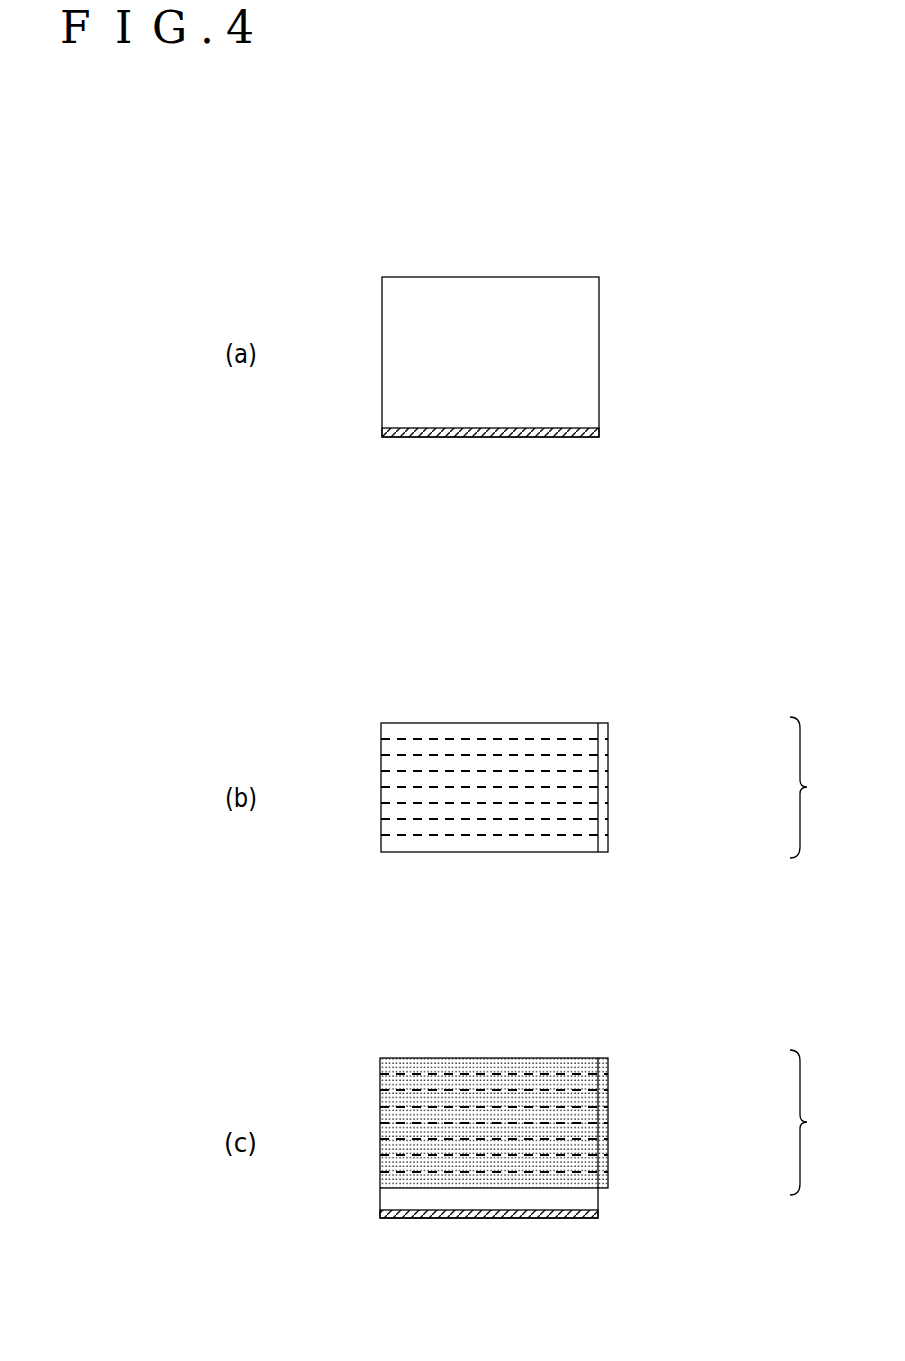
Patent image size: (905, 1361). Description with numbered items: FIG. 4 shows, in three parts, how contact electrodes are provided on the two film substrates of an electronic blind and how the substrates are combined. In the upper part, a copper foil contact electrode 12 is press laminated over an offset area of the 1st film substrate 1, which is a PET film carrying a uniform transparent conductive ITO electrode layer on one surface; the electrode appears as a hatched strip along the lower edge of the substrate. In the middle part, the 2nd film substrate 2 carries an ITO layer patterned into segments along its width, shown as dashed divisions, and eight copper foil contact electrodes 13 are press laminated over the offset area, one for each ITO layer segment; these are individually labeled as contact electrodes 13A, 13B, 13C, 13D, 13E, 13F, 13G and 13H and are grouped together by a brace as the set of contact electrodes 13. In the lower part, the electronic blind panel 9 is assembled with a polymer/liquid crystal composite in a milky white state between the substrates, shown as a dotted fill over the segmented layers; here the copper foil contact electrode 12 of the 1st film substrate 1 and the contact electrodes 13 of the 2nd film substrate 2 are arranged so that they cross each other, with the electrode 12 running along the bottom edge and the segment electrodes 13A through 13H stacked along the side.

The 1st film substrate 1 is at (490, 277).
The 2nd film substrate 2 is at (488, 723).
The electronic blind panel 9 is at (368, 1066).
The copper foil contact electrode 12 is at (428, 437).
The copper foil contact electrodes 13 is at (715, 956).
The copper foil contact electrode 13A is at (608, 728).
The copper foil contact electrode 13B is at (608, 746).
The copper foil contact electrode 13C is at (608, 758).
The copper foil contact electrode 13D is at (608, 774).
The copper foil contact electrode 13E is at (608, 794).
The copper foil contact electrode 13F is at (608, 811).
The copper foil contact electrode 13G is at (608, 822).
The copper foil contact electrode 13H is at (608, 839).